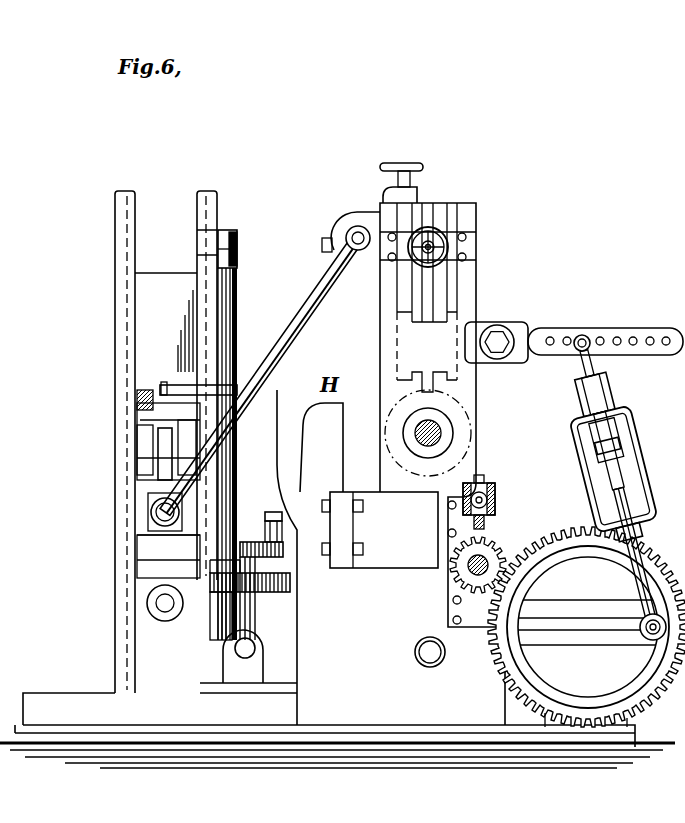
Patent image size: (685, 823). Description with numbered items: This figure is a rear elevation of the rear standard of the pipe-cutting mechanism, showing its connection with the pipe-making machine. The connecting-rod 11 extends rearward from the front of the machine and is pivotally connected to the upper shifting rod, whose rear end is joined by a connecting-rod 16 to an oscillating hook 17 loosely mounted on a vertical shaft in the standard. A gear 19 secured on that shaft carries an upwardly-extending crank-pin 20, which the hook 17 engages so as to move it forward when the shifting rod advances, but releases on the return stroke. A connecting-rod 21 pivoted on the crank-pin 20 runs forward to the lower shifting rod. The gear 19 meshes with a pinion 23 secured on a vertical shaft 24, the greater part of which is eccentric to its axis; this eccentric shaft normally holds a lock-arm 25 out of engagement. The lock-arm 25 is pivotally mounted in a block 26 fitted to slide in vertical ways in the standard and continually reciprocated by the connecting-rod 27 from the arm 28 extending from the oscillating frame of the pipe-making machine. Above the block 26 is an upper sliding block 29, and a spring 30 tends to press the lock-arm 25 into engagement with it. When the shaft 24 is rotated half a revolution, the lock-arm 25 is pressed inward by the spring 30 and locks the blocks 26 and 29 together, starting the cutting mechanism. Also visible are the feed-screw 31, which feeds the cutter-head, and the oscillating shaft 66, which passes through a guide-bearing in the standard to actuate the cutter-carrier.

The connecting-rod 11 is at (575, 328).
The connecting-rod 16 is at (273, 513).
The oscillating hook 17 is at (265, 528).
The gear 19 is at (290, 583).
The crank-pin 20 is at (300, 573).
The connecting-rod 21 is at (281, 570).
The pinion 23 is at (213, 598).
The vertical shaft 24 is at (237, 283).
The lock-arm 25 is at (150, 410).
The block 26 is at (146, 491).
The connecting-rod 27 is at (293, 333).
The arm 28 is at (359, 251).
The sliding block 29 is at (166, 442).
The spring 30 is at (152, 467).
The feed-screw 31 is at (164, 606).
The oscillating shaft 66 is at (249, 648).